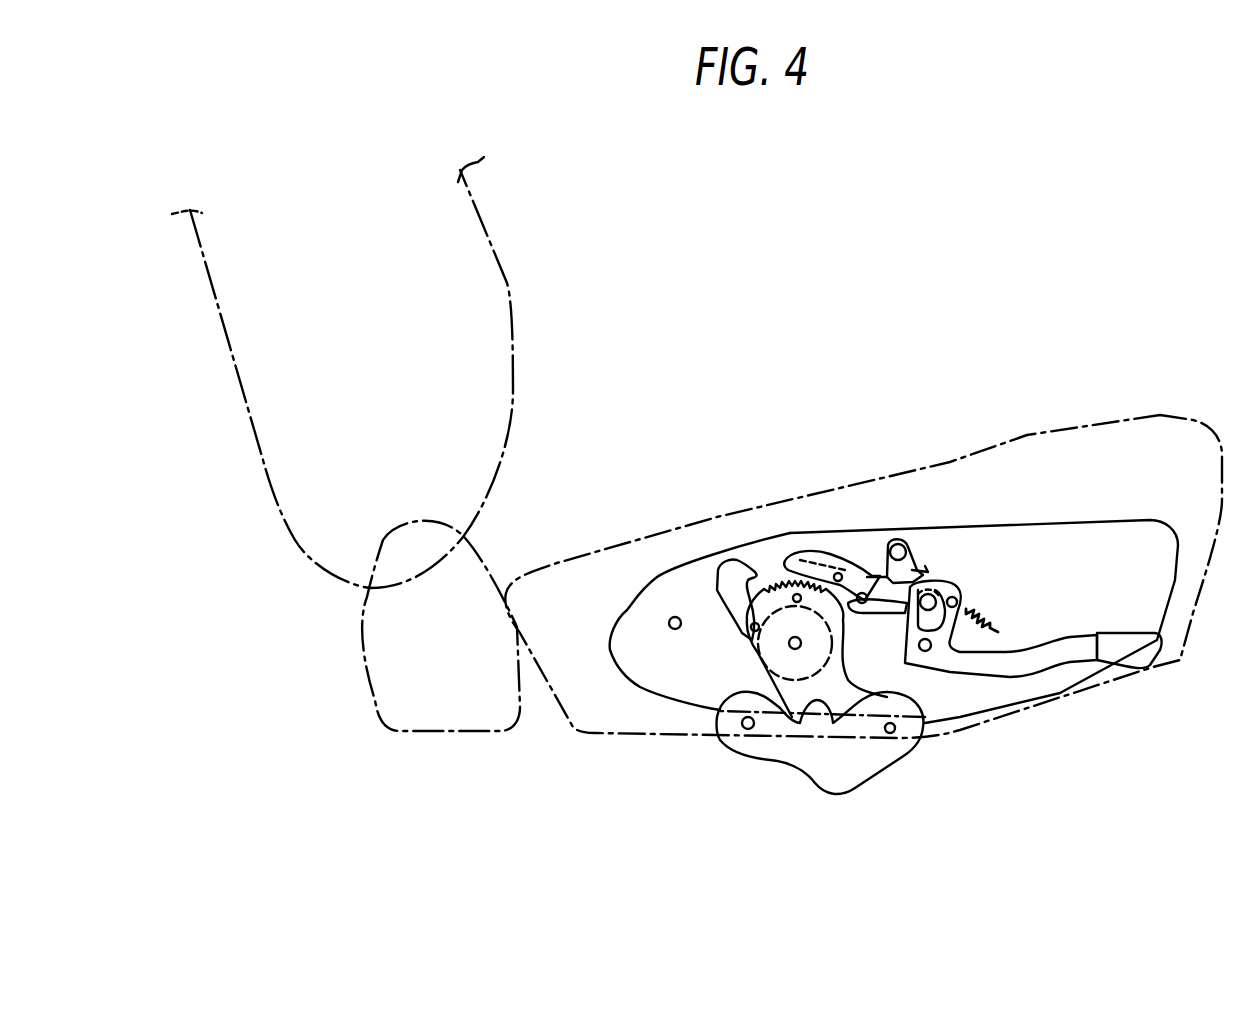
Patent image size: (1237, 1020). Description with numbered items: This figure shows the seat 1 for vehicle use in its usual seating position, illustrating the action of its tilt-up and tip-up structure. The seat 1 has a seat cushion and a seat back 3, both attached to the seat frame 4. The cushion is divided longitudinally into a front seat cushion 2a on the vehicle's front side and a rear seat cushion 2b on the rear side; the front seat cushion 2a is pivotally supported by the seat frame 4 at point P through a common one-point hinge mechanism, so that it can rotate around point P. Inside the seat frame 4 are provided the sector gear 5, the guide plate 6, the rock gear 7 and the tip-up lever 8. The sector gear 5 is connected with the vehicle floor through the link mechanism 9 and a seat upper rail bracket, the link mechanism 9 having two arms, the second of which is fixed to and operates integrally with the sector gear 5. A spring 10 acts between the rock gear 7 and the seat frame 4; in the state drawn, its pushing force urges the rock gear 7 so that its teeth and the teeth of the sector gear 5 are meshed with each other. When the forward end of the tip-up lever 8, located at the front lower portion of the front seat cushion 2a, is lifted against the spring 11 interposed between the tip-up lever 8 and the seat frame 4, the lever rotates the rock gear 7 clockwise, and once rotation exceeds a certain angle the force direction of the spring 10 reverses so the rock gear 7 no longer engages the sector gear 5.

The seat 1 is at (932, 345).
The front seat cushion 2a is at (1023, 437).
The rear seat cushion 2b is at (483, 563).
The seat back 3 is at (510, 283).
The seat frame 4 is at (1120, 520).
The sector gear 5 is at (760, 640).
The guide plate 6 is at (723, 563).
The rock gear 7 is at (813, 555).
The tip-up lever 8 is at (1107, 660).
The link mechanism 9 is at (790, 769).
The spring 10 is at (898, 540).
The spring 11 is at (970, 613).
The point P is at (672, 630).